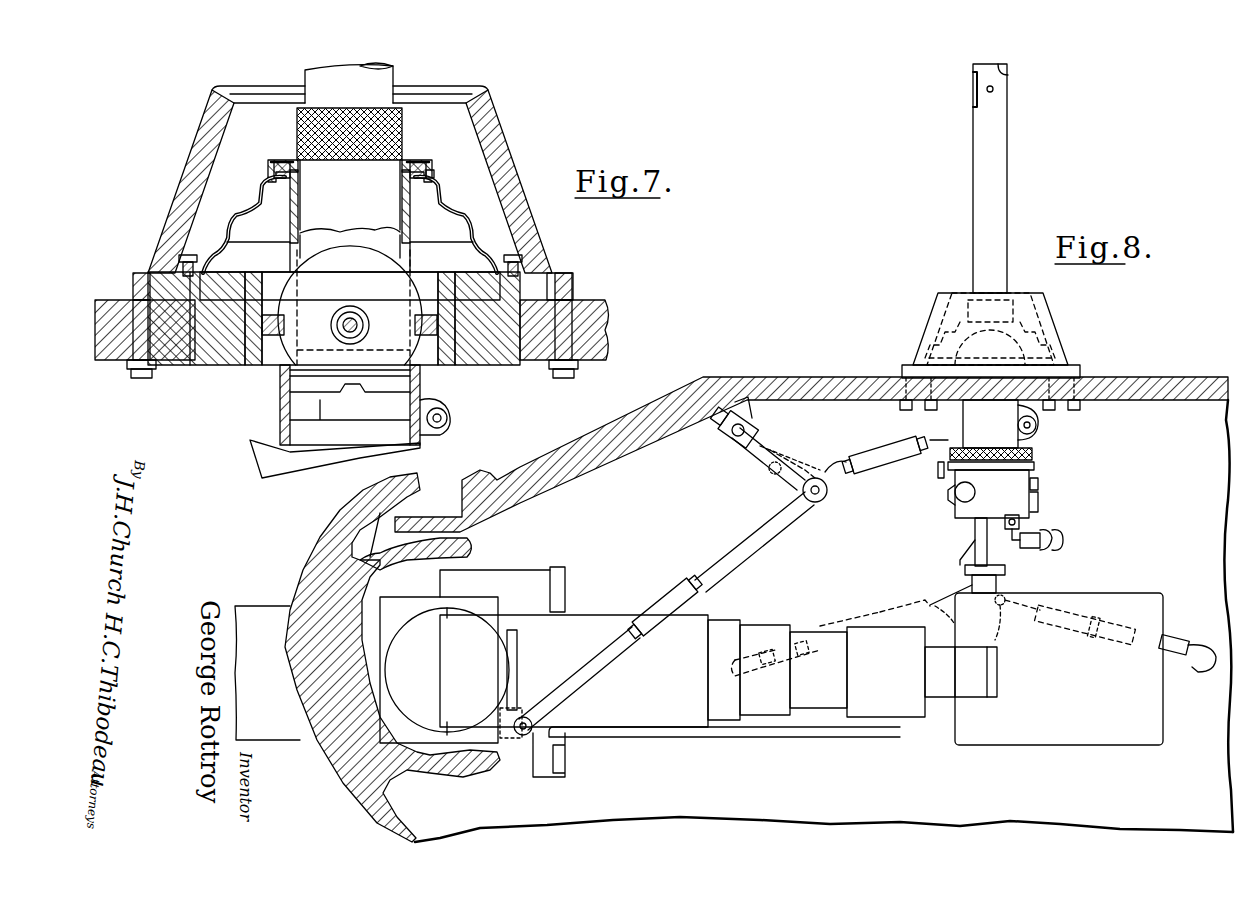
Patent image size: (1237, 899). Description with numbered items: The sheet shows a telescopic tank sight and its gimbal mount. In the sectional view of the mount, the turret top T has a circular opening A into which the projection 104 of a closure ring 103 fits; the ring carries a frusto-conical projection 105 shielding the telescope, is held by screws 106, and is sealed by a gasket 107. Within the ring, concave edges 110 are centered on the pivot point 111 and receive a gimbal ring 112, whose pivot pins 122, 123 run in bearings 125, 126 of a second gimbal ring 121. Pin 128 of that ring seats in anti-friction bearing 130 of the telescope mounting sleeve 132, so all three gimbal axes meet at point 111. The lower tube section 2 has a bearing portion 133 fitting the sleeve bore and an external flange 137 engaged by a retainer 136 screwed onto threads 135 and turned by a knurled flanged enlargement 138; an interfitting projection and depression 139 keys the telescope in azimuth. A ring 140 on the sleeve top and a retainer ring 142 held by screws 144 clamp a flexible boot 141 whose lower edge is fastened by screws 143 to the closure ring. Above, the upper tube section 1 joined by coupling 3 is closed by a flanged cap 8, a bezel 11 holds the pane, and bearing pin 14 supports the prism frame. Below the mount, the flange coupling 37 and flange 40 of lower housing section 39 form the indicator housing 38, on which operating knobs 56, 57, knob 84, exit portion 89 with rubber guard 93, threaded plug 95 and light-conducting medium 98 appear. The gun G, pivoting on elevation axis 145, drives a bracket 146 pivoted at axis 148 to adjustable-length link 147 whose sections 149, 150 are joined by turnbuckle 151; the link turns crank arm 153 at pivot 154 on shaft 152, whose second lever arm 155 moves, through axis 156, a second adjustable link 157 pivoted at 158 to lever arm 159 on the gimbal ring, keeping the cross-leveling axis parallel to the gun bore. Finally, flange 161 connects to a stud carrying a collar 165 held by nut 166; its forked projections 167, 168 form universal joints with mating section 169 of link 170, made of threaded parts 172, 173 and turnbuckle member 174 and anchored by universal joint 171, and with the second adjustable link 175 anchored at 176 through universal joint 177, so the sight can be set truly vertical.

In FIG. 7, the upper tube section 1 is at (378, 80).
In FIG. 8, the upper tube section 1 is at (973, 170).
In FIG. 7, the lower tube section 2 is at (303, 165).
In FIG. 7, the coupling 3 is at (398, 124).
In FIG. 8, the coupling 3 is at (1010, 305).
In FIG. 8, the flanged cap 8 is at (1006, 76).
In FIG. 8, the bezel 11 is at (973, 95).
In FIG. 8, the bearing pin 14 is at (994, 90).
In FIG. 8, the flange coupling 37 is at (1035, 466).
In FIG. 8, the indicator housing 38 is at (1044, 488).
In FIG. 8, the lower housing section 39 is at (978, 518).
In FIG. 8, the flange 40 is at (1002, 470).
In FIG. 8, the operating knob 56 is at (958, 502).
In FIG. 8, the operating knob 57 is at (955, 492).
In FIG. 8, the knob 84 is at (938, 470).
In FIG. 8, the exit portion 89 is at (1022, 538).
In FIG. 8, the rubber guard 93 is at (1065, 541).
In FIG. 8, the threaded plug 95 is at (1005, 522).
In FIG. 8, the light-conducting medium 98 is at (1040, 500).
In FIG. 7, the closure ring 103 is at (530, 178).
In FIG. 8, the closure ring 103 is at (1076, 370).
In FIG. 7, the projection 104 is at (212, 355).
In FIG. 7, the frusto-conical projection 105 is at (198, 142).
In FIG. 8, the frusto-conical projection 105 is at (1050, 318).
In FIG. 7, the screws 106 is at (138, 378).
In FIG. 8, the screws 106 is at (1108, 410).
In FIG. 7, the gasket 107 is at (560, 278).
In FIG. 7, the concave edges 110 is at (350, 271).
In FIG. 7, the pivot point 111 is at (365, 318).
In FIG. 8, the pivot point 111 is at (990, 390).
In FIG. 7, the gimbal ring 112 is at (465, 358).
In FIG. 7, the second gimbal ring 121 is at (265, 360).
In FIG. 7, the pivot pin 122 is at (418, 326).
In FIG. 7, the pivot pin 123 is at (272, 322).
In FIG. 7, the bearing 125 is at (262, 308).
In FIG. 7, the bearing 126 is at (440, 308).
In FIG. 7, the pin 128 is at (348, 312).
In FIG. 7, the anti-friction bearing 130 is at (336, 330).
In FIG. 7, the telescope mounting sleeve 132 is at (291, 220).
In FIG. 7, the bearing portion 133 is at (406, 200).
In FIG. 7, the threads 135 is at (281, 392).
In FIG. 7, the retainer 136 is at (283, 425).
In FIG. 8, the retainer 136 is at (963, 416).
In FIG. 7, the external flange 137 is at (325, 455).
In FIG. 8, the knurled flanged enlargement 138 is at (1033, 454).
In FIG. 7, the interfitting projection and depression 139 is at (355, 394).
In FIG. 7, the ring 140 is at (268, 178).
In FIG. 7, the flexible boot 141 is at (447, 205).
In FIG. 8, the flexible boot 141 is at (925, 345).
In FIG. 7, the retainer ring 142 is at (430, 168).
In FIG. 7, the screws 143 is at (189, 255).
In FIG. 7, the screws 144 is at (277, 162).
In FIG. 8, the elevation axis 145 is at (447, 668).
In FIG. 8, the bracket 146 is at (520, 736).
In FIG. 8, the adjustable-length link 147 is at (668, 593).
In FIG. 8, the axis 148 is at (565, 745).
In FIG. 8, the link section 149 is at (588, 682).
In FIG. 8, the link section 150 is at (760, 540).
In FIG. 8, the turnbuckle 151 is at (664, 620).
In FIG. 8, the shaft 152 is at (748, 426).
In FIG. 8, the crank arm 153 is at (795, 462).
In FIG. 8, the pivot 154 is at (823, 497).
In FIG. 8, the second lever arm 155 is at (763, 463).
In FIG. 8, the axis 156 is at (770, 478).
In FIG. 8, the second adjustable link 157 is at (866, 442).
In FIG. 7, the pivot 158 is at (447, 420).
In FIG. 8, the pivot 158 is at (1037, 428).
In FIG. 7, the lever arm 159 is at (432, 402).
In FIG. 8, the lever arm 159 is at (1038, 412).
In FIG. 8, the flange 161 is at (962, 551).
In FIG. 8, the collar 165 is at (998, 582).
In FIG. 8, the nut 166 is at (1013, 625).
In FIG. 8, the forked projection 167 is at (970, 575).
In FIG. 8, the forked projection 168 is at (1003, 605).
In FIG. 8, the mating section 169 is at (938, 598).
In FIG. 8, the link 170 is at (905, 606).
In FIG. 8, the universal joint 171 is at (768, 668).
In FIG. 8, the threaded part 172 is at (805, 655).
In FIG. 8, the threaded part 173 is at (959, 622).
In FIG. 8, the turnbuckle member 174 is at (857, 618).
In FIG. 8, the second adjustable link 175 is at (1105, 625).
In FIG. 8, the turret wall connection 176 is at (1196, 670).
In FIG. 8, the universal joint 177 is at (1183, 636).
In FIG. 7, the circular opening A is at (528, 362).
In FIG. 8, the gun G is at (283, 735).
In FIG. 7, the turret top T is at (598, 326).
In FIG. 8, the turret top T is at (1160, 378).